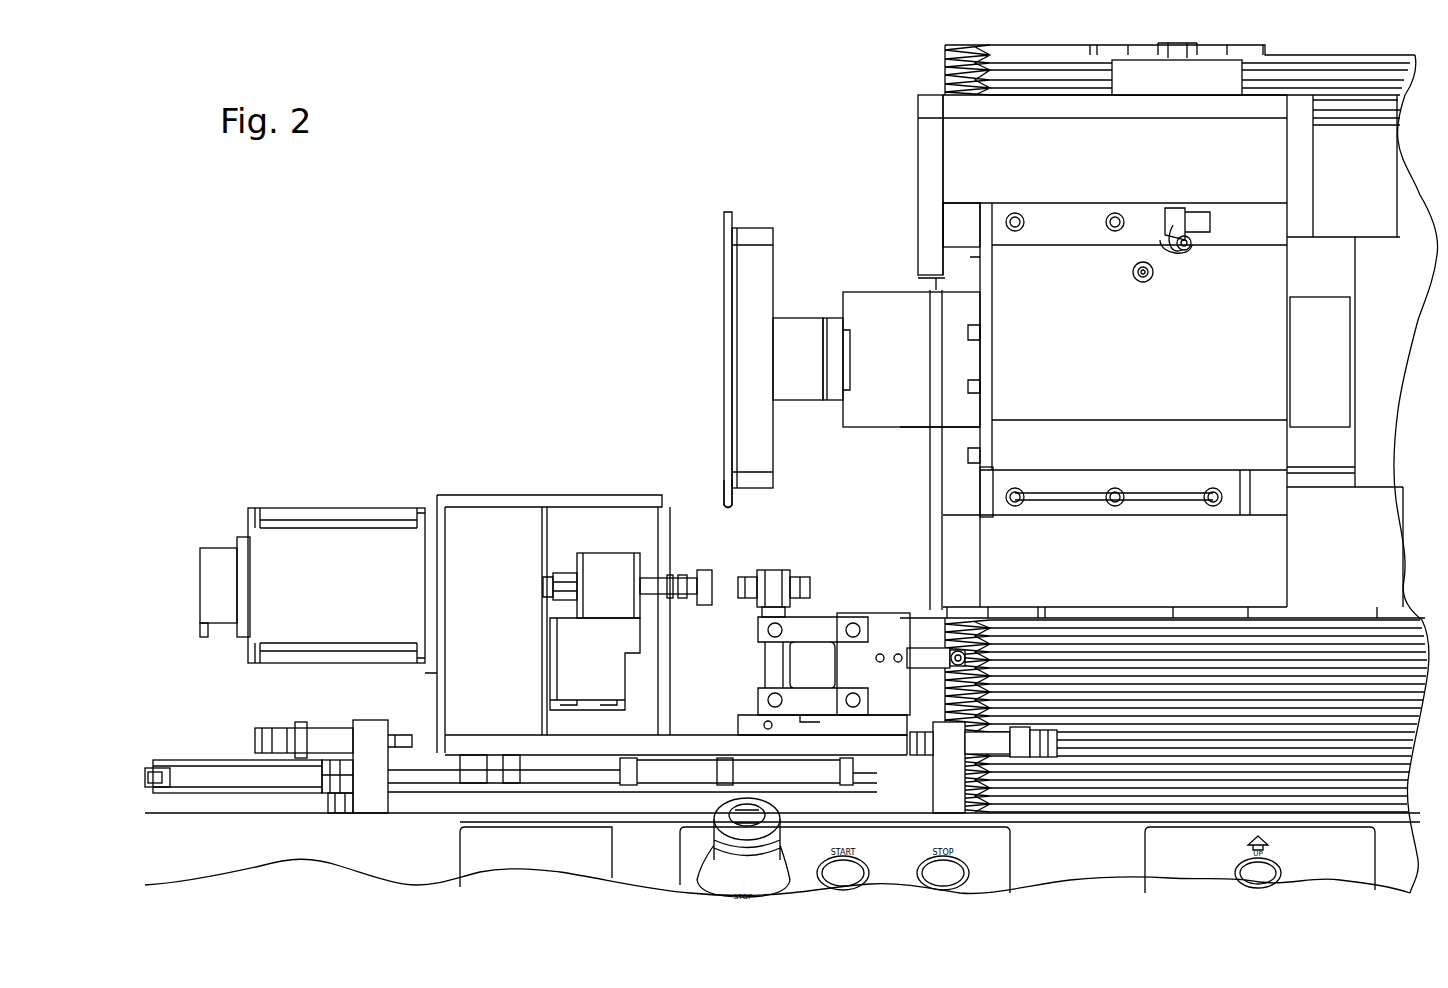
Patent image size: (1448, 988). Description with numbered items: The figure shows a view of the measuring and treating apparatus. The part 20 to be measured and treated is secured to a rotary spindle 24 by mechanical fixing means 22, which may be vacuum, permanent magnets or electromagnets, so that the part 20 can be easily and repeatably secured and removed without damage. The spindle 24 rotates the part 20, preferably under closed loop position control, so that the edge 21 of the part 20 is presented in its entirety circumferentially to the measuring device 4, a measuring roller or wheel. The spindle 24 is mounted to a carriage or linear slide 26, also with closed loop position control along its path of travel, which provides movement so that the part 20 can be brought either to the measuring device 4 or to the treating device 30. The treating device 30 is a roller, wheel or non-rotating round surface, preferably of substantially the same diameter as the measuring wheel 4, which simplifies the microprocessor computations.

The measuring device 4 is at (772, 570).
The part 20 is at (723, 318).
The edge 21 is at (727, 510).
The mechanical fixing means 22 is at (750, 287).
The rotary spindle 24 is at (797, 358).
The linear slide 26 is at (970, 180).
The treating device 30 is at (701, 570).